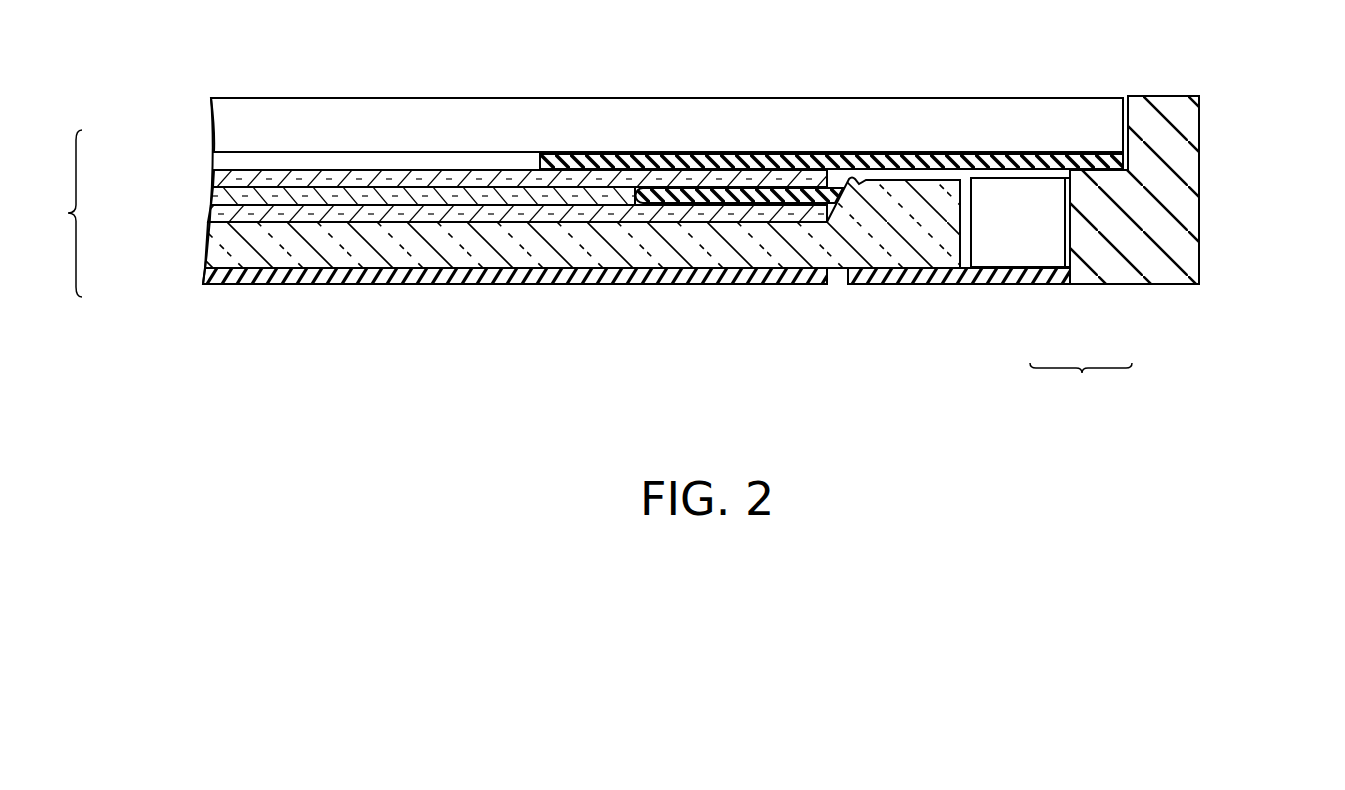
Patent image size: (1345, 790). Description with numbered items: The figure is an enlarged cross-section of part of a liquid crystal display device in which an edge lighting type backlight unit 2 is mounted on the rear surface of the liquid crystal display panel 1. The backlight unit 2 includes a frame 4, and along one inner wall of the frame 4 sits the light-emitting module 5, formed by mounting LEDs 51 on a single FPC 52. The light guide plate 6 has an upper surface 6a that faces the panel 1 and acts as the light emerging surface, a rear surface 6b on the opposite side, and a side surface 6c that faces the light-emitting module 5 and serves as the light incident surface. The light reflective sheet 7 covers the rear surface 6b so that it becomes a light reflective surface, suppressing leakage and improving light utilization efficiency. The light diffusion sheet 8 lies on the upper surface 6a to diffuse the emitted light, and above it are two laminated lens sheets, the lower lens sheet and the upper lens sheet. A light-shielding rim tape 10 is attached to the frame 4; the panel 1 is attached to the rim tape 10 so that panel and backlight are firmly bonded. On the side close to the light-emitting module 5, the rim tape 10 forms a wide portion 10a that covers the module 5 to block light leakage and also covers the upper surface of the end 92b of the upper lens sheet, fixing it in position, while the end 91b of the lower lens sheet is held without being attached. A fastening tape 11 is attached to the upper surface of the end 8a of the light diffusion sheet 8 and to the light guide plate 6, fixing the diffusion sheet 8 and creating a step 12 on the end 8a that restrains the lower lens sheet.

The liquid crystal display panel 1 is at (230, 125).
The backlight unit 2 is at (667, 217).
The frame 4 is at (1188, 217).
The light-emitting module 5 is at (1051, 290).
The light guide plate 6 is at (219, 247).
The upper surface 6a is at (367, 210).
The rear surface 6b is at (463, 270).
The side surface 6c is at (961, 228).
The light reflective sheet 7 is at (216, 278).
The light diffusion sheet 8 is at (216, 212).
The end of the light diffusion sheet 8a is at (798, 214).
The end of the lower lens sheet 91b is at (610, 187).
The end of the upper lens sheet 92b is at (742, 186).
The rim tape 10 is at (1112, 160).
The wide portion 10a is at (810, 162).
The fastening tape 11 is at (738, 200).
The step 12 is at (674, 192).
The LED 51 is at (1023, 237).
The FPC 52 is at (1073, 285).